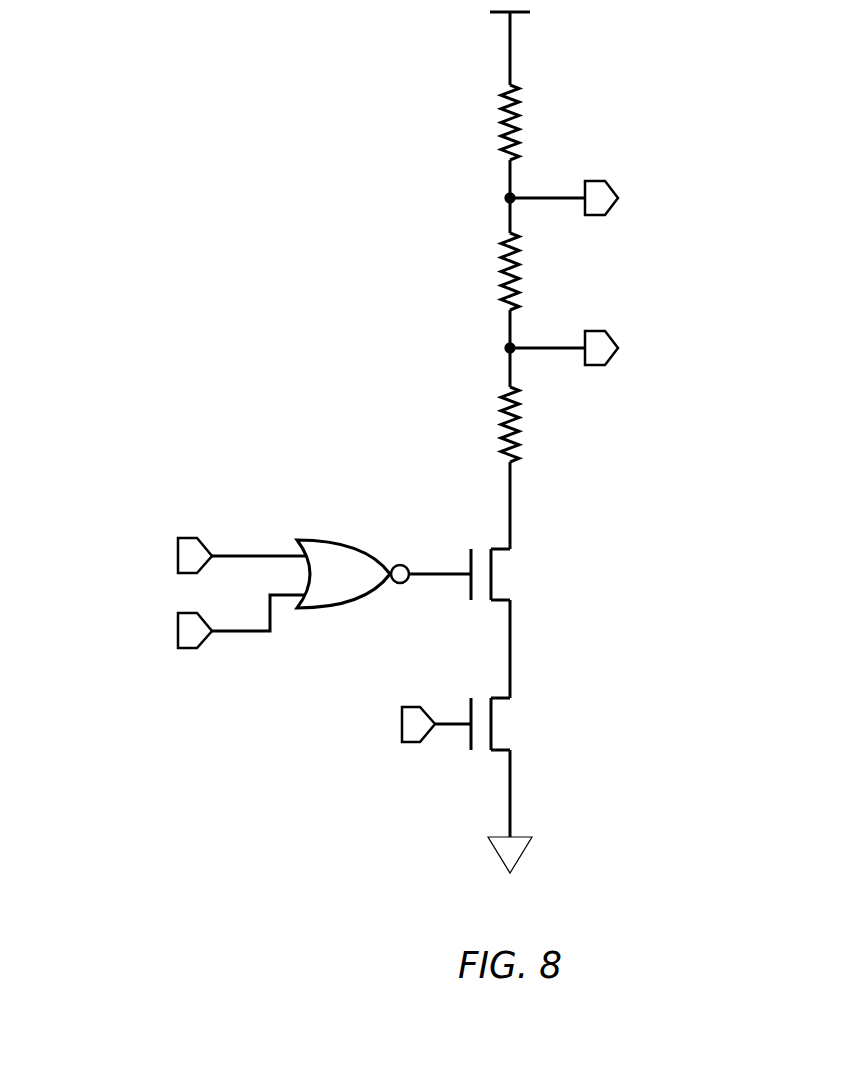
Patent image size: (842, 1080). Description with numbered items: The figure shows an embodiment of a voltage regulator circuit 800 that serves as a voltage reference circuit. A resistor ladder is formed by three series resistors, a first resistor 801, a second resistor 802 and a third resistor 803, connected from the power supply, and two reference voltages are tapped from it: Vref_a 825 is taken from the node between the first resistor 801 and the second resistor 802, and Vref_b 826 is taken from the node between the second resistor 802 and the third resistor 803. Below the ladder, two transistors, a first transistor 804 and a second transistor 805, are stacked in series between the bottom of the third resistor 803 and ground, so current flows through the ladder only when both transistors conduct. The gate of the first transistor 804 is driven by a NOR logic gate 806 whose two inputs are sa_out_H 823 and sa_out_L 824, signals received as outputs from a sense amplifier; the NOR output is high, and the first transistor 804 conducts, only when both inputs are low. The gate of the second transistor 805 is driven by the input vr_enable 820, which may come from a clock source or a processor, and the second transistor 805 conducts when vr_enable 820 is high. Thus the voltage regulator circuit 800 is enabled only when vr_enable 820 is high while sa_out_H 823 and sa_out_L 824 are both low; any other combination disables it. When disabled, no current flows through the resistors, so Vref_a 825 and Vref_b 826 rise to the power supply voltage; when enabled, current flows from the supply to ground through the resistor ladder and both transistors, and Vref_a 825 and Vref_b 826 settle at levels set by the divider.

The voltage regulator circuit 800 is at (382, 442).
The resistor R801 801 is at (483, 122).
The resistor R802 802 is at (483, 271).
The resistor R803 803 is at (483, 424).
The transistor Q804 804 is at (518, 574).
The transistor Q805 805 is at (519, 724).
The NOR logic gate 806 is at (384, 555).
The vr_enable input 820 is at (366, 724).
The sa_out_H input 823 is at (172, 555).
The sa_out_L input 824 is at (173, 621).
The Vref_a reference voltage output 825 is at (618, 198).
The Vref_b reference voltage output 826 is at (618, 348).